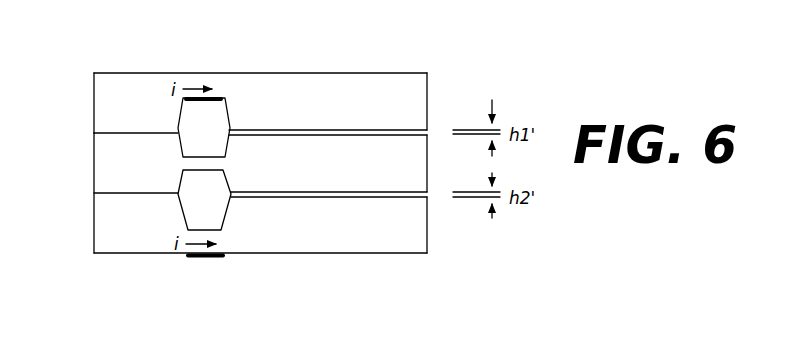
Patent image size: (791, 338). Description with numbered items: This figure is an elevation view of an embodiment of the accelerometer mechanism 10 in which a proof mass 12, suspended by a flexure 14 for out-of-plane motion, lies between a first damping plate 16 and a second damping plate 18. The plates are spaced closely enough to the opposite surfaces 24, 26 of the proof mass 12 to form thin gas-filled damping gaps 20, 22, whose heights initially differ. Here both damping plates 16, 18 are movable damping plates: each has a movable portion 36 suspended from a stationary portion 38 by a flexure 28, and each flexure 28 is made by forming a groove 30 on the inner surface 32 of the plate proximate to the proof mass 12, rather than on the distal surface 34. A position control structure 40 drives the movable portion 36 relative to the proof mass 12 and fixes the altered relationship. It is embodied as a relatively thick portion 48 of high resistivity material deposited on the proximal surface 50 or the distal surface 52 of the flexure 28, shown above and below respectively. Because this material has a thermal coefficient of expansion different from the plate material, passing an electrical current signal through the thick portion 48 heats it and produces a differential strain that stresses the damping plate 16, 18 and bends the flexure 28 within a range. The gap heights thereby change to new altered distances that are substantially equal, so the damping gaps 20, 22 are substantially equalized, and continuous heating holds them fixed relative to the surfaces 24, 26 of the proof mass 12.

The accelerometer mechanism 10 is at (479, 70).
The proof mass 12 is at (382, 182).
The flexure 14 is at (200, 160).
The first damping plate 16 is at (94, 103).
The second damping plate 18 is at (94, 222).
The first damping gap 20 is at (435, 132).
The second damping gap 22 is at (435, 197).
The first surface of proof mass 24 is at (397, 138).
The second surface of proof mass 26 is at (405, 197).
The flexure of damping plate 28 is at (200, 73).
The groove 30 is at (224, 112).
The proximate (inner) surface 32 is at (343, 135).
The distal surface 34 is at (306, 73).
The movable portion 36 is at (390, 110).
The stationary (remainder) portion 38 is at (142, 110).
The position control structure 40 is at (227, 72).
The thick portion of high resistivity material 48 is at (178, 128).
The proximal surface of flexure 50 is at (186, 100).
The distal surface of flexure 52 is at (172, 73).